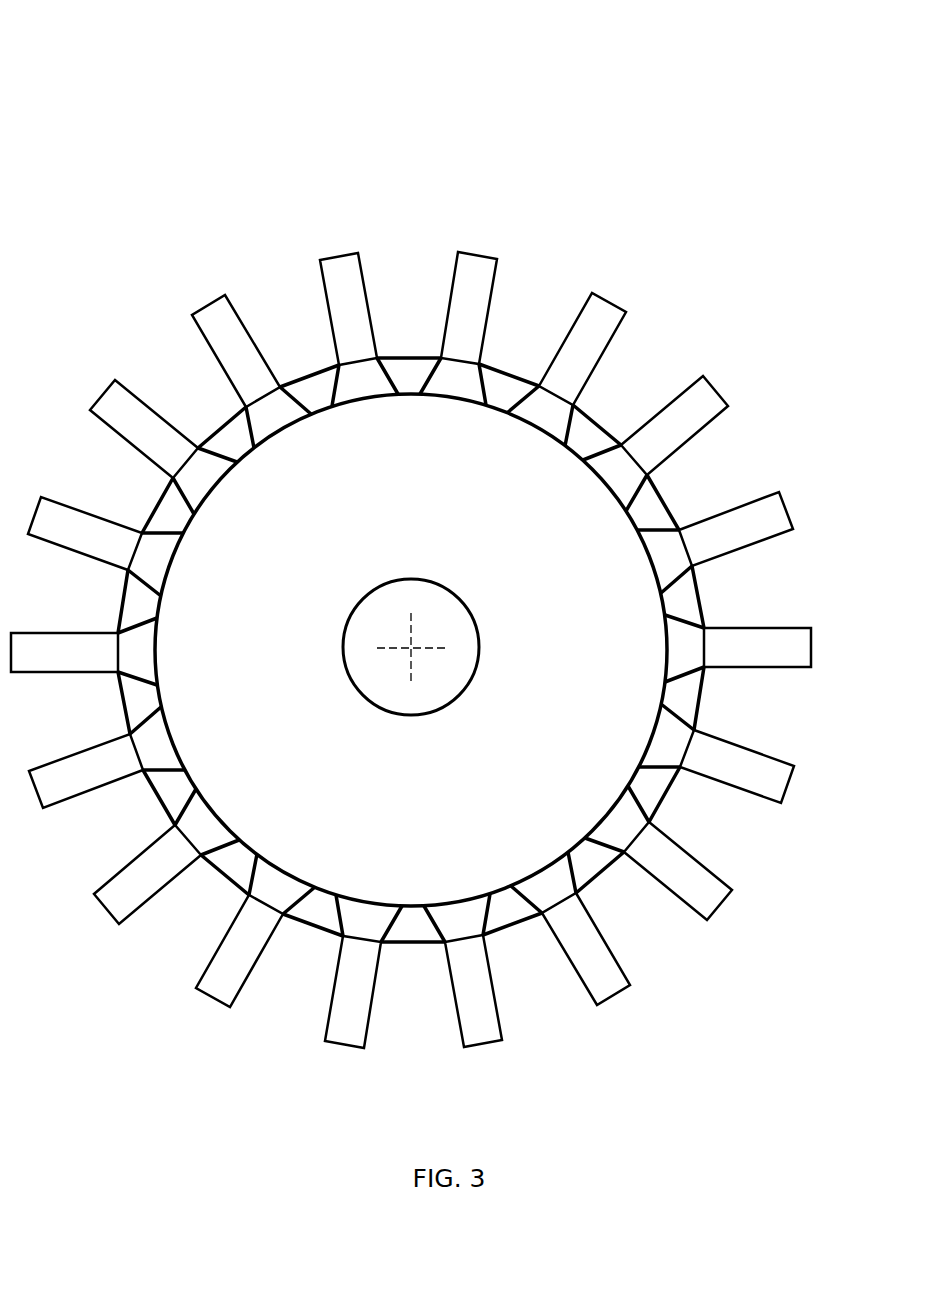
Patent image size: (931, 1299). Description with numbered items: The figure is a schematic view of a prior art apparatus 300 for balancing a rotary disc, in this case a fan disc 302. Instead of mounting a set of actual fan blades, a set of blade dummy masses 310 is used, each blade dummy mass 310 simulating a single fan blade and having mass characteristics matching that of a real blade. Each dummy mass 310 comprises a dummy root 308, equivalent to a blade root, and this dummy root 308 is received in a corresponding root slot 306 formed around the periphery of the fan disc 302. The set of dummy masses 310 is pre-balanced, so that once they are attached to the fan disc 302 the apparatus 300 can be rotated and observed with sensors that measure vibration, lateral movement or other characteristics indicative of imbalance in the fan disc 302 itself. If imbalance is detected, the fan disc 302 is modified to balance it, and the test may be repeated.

The apparatus 300 is at (191, 212).
The fan disc 302 is at (450, 807).
The root slot 306 is at (432, 372).
The dummy root 308 is at (460, 378).
The blade dummy mass 310 is at (120, 410).